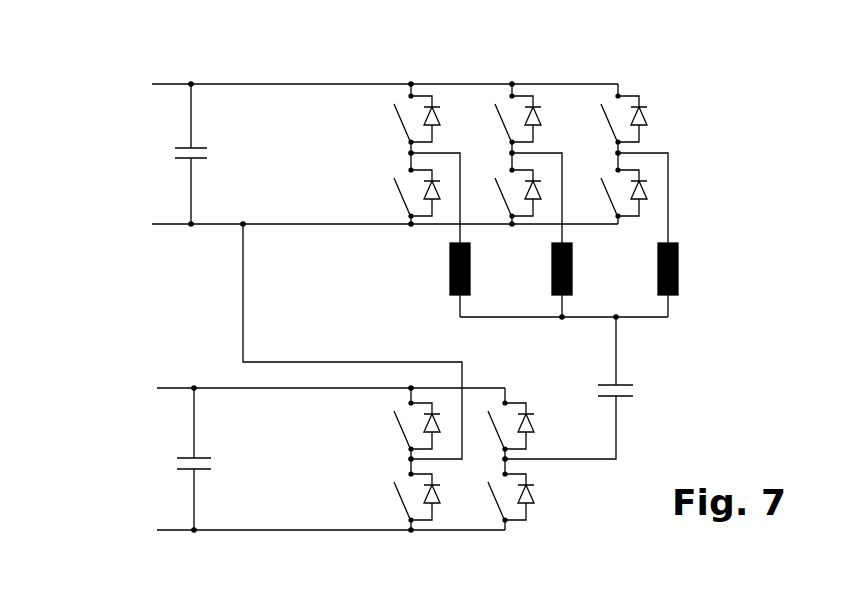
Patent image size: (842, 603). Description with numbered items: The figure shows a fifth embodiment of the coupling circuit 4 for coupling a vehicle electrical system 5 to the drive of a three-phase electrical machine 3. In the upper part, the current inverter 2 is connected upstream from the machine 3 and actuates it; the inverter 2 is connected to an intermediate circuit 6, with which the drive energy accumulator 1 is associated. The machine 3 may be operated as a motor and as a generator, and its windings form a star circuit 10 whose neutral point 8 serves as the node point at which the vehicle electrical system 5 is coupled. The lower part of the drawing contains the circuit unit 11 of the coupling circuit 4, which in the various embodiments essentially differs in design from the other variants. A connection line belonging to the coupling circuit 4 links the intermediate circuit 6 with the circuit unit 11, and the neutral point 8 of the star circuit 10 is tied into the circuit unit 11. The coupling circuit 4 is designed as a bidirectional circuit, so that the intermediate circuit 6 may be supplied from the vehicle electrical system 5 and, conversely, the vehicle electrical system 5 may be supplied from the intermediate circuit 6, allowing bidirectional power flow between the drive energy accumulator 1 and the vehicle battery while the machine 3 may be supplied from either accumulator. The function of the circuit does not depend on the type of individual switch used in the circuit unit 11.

The drive energy accumulator 1 is at (112, 182).
The current inverter 2 is at (559, 68).
The three-phase electrical machine 3 is at (699, 286).
The coupling circuit 4 is at (220, 344).
The vehicle electrical system 5 is at (120, 457).
The intermediate circuit 6 is at (165, 116).
The neutral point 8 is at (629, 326).
The star circuit 10 is at (668, 305).
The circuit unit 11 is at (469, 547).